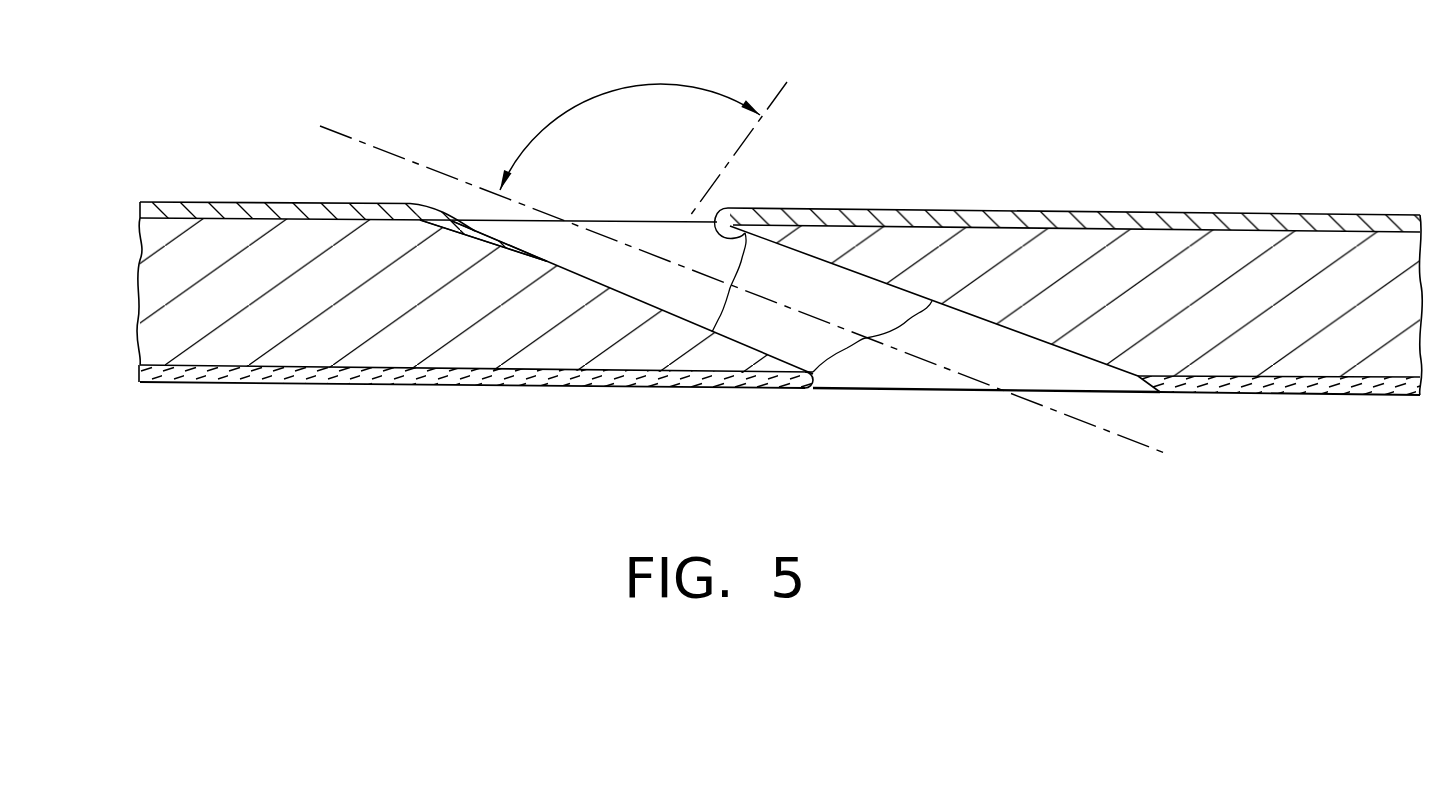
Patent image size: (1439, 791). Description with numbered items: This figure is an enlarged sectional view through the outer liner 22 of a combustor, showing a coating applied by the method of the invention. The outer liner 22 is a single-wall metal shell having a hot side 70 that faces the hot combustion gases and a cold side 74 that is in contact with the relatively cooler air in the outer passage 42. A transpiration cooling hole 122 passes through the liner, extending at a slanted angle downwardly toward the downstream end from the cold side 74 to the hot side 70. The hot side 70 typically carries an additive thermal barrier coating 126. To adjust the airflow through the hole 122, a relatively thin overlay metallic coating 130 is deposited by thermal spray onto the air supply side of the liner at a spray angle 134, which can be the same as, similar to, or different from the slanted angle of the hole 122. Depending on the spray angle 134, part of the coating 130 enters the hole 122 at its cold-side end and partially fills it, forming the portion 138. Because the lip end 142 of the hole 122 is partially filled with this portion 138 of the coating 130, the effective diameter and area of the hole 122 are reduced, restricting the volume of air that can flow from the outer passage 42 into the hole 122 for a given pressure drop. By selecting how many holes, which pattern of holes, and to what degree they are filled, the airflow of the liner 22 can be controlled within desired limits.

The outer liner 22 is at (815, 95).
The outer passage 42 is at (199, 174).
The hot side 70 is at (165, 365).
The cold side 74 is at (140, 248).
The transpiration cooling hole 122 is at (945, 374).
The thermal barrier coating 126 is at (448, 387).
The overlay metallic coating 130 is at (353, 202).
The spray angle 134 is at (610, 89).
The portion of coating 138 is at (513, 232).
The lip end 142 is at (717, 215).